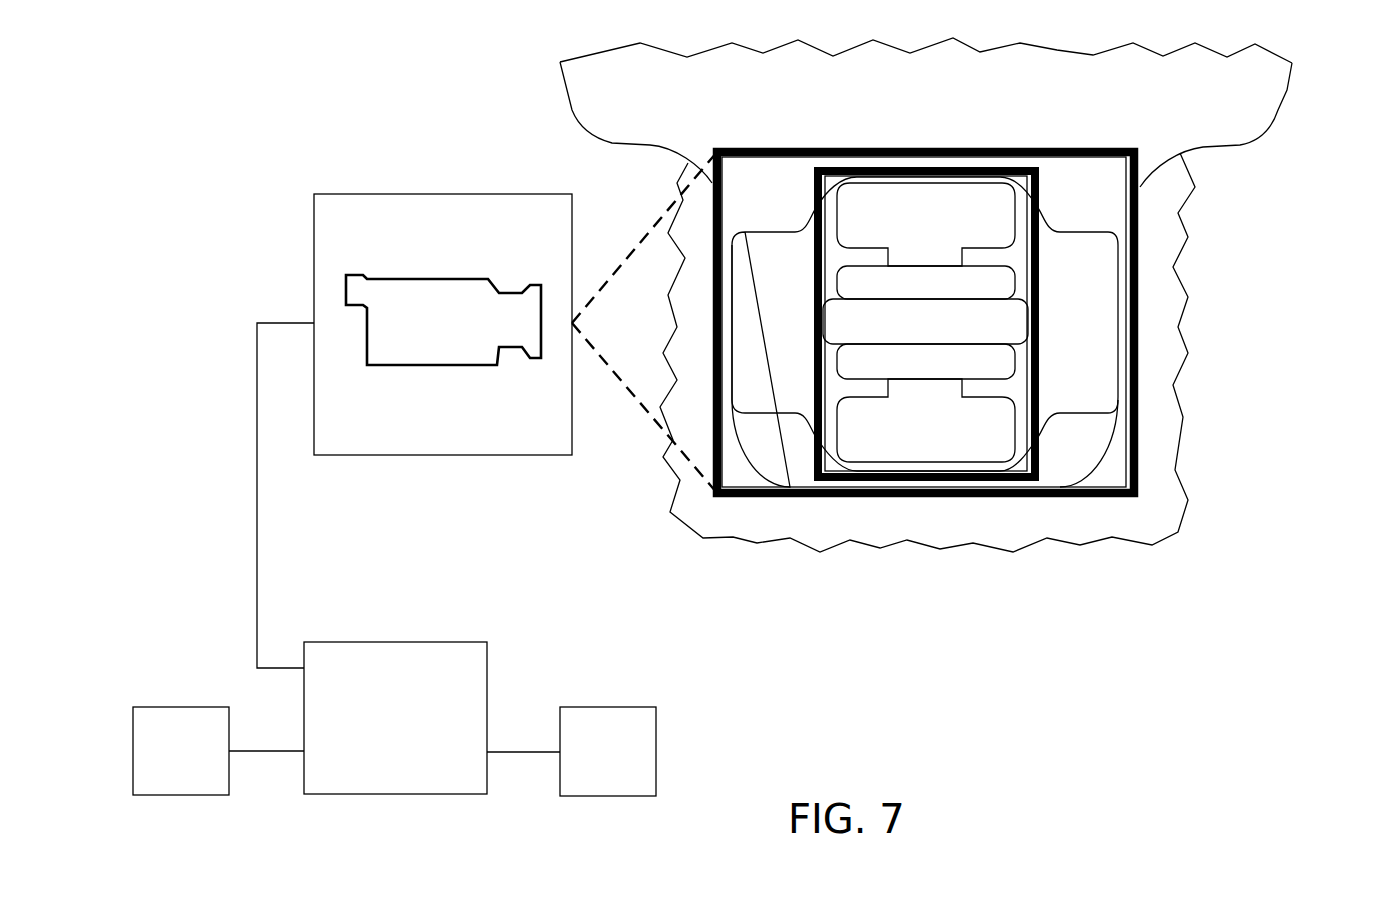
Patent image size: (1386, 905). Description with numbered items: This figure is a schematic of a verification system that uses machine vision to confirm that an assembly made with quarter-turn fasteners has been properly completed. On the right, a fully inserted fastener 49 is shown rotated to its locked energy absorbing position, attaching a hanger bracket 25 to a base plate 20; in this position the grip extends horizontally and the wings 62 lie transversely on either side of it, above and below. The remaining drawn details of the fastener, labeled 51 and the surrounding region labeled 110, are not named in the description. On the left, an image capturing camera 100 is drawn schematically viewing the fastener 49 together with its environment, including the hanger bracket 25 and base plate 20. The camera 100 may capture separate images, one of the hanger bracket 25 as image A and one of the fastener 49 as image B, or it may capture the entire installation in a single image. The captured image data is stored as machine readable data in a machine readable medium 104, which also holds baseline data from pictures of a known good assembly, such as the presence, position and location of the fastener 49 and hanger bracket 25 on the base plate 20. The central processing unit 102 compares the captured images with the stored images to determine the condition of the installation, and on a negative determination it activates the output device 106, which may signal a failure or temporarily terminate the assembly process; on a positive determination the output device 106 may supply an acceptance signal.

The base plate 20 is at (875, 520).
The hanger bracket 25 is at (783, 417).
The fastener 49 is at (987, 465).
The center bar 51 is at (943, 327).
The wings 62 is at (895, 207).
The image capturing camera 100 is at (459, 334).
The central processing unit 102 is at (413, 696).
The machine readable medium 104 is at (218, 751).
The output device 106 is at (571, 751).
The tissue surface 110 is at (1198, 112).
The image A is at (1140, 237).
The image B is at (1037, 385).